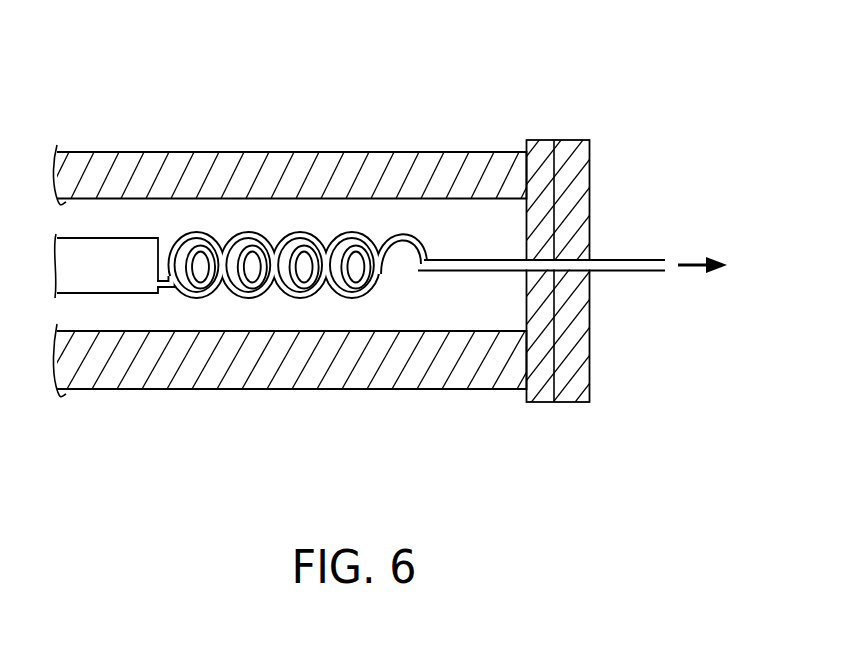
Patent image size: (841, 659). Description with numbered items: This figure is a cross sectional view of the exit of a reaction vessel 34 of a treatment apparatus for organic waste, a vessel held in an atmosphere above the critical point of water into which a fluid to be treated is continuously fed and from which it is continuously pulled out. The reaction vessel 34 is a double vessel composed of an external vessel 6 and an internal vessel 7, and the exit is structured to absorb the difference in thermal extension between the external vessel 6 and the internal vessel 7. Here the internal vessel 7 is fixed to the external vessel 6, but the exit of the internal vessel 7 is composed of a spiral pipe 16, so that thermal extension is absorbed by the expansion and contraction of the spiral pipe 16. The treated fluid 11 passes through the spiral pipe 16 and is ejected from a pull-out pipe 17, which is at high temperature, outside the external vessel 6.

The reaction vessel 34 is at (538, 28).
The external vessel 6 is at (128, 156).
The internal vessel 7 is at (157, 238).
The spiral pipe 16 is at (265, 287).
The pull-out pipe 17 is at (625, 259).
The treated fluid 11 is at (718, 267).